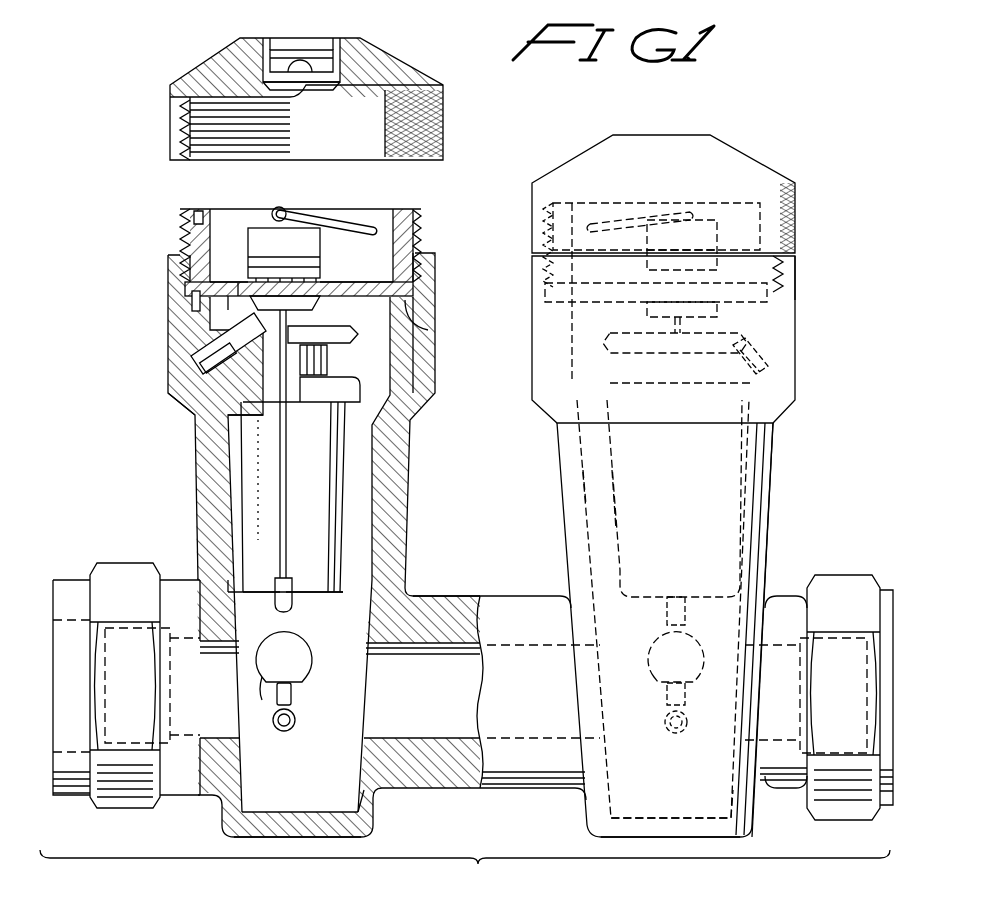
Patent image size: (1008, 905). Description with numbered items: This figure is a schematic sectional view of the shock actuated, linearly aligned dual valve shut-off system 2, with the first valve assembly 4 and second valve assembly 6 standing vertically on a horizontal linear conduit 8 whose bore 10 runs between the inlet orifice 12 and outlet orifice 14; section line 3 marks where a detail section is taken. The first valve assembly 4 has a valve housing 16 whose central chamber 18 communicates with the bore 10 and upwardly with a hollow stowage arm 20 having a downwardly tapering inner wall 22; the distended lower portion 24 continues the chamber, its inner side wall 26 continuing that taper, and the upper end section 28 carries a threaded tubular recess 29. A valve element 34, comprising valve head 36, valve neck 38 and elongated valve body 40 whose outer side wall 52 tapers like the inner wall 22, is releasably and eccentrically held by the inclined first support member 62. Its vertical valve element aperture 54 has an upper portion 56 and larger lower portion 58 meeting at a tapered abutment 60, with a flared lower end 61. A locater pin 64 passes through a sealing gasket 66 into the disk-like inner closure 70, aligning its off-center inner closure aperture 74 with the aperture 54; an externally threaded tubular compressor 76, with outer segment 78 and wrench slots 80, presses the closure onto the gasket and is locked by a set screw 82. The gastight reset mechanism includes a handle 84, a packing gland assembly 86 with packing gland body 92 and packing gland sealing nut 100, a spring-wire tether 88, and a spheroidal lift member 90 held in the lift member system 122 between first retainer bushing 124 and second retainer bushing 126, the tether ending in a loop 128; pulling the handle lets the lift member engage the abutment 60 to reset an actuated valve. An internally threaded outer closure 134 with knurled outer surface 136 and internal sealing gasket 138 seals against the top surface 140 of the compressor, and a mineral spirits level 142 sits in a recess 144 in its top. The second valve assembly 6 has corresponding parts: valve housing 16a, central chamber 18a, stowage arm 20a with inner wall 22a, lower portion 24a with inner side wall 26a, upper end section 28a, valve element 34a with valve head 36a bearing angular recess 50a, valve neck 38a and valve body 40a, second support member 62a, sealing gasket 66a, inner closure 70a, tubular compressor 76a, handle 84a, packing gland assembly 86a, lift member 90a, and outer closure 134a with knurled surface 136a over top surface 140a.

The dual valve shut-off system 2 is at (465, 874).
The section line 3- 3 is at (291, 196).
The first valve assembly 4 is at (106, 188).
The second valve assembly 6 is at (832, 452).
The linear conduit 8 is at (508, 594).
The bore 10 is at (458, 648).
The inlet orifice 12 is at (53, 602).
The outlet orifice 14 is at (890, 612).
The valve housing 16 is at (192, 490).
The central chamber 18 is at (338, 762).
The stowage arm 20 is at (198, 538).
The inner wall 22 is at (372, 560).
The lower portion 24 is at (224, 836).
The inner side wall 26 is at (362, 782).
The upper end section 28 is at (444, 255).
The threaded tubular recess 29 is at (172, 264).
The valve element 34 is at (356, 500).
The valve head 36 is at (220, 333).
The valve neck 38 is at (172, 396).
The elongated valve body 40 is at (382, 418).
The outer side wall 52 is at (348, 523).
The valve element aperture 54 is at (260, 512).
The upper portion 56 is at (302, 386).
The lower portion 58 is at (265, 568).
The tapered abutment 60 is at (243, 436).
The lower end 61 is at (238, 582).
The first support member 62 is at (214, 356).
The locater pin 64 is at (190, 312).
The sealing gasket 66 is at (408, 312).
The inner closure 70 is at (232, 283).
The inner closure aperture 74 is at (306, 290).
The tubular compressor 76 is at (228, 226).
The outer segment 78 is at (170, 207).
The wrench slots 80 is at (452, 217).
The set screw 82 is at (428, 256).
The handle 84 is at (357, 222).
The packing gland assembly 86 is at (320, 256).
The tether 88 is at (280, 522).
The lift member 90 is at (270, 660).
The packing gland body 92 is at (326, 313).
The packing gland sealing nut 100 is at (262, 228).
The lift member system 122 is at (318, 658).
The first retainer bushing 124 is at (292, 605).
The second retainer bushing 126 is at (272, 708).
The loop 128 is at (297, 723).
The outer closure 134 is at (178, 58).
The knurled outer surface 136 is at (428, 110).
The sealing gasket 138 is at (185, 104).
The top surface 140 is at (206, 215).
The mineral spirits level 142 is at (326, 44).
The recess 144 is at (288, 40).
The outer closure 134a is at (770, 152).
The knurled outer surface 136a is at (800, 192).
The top surface 140a is at (790, 252).
The tubular compressor 76a is at (578, 215).
The handle 84a is at (640, 220).
The packing gland assembly 86a is at (760, 238).
The inner closure 70a is at (632, 292).
The upper end section 28a is at (818, 258).
The sealing gasket 66a is at (770, 336).
The valve head 36a is at (766, 352).
The second support member 62a is at (782, 362).
The angular recess 50a is at (776, 374).
The elongated valve body 40a is at (604, 388).
The valve neck 38a is at (663, 609).
The inner wall 22a is at (584, 492).
The valve element 34a is at (638, 524).
The lift member 90a is at (698, 630).
The central chamber 18a is at (690, 776).
The inner side wall 26a is at (726, 797).
The lower portion 24a is at (592, 828).
The stowage arm 20a is at (772, 494).
The valve housing 16a is at (776, 536).